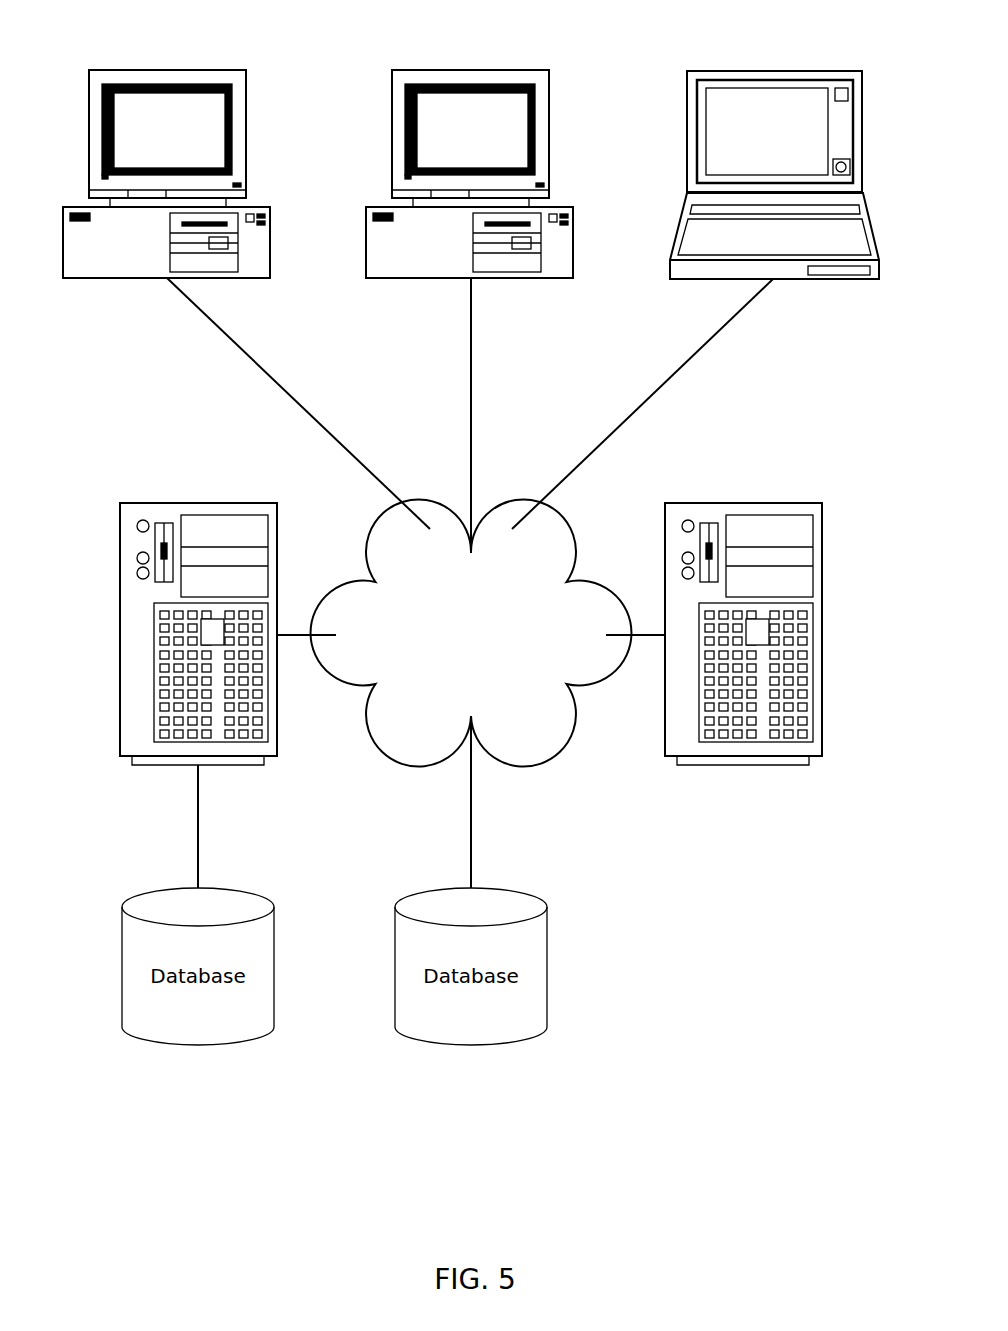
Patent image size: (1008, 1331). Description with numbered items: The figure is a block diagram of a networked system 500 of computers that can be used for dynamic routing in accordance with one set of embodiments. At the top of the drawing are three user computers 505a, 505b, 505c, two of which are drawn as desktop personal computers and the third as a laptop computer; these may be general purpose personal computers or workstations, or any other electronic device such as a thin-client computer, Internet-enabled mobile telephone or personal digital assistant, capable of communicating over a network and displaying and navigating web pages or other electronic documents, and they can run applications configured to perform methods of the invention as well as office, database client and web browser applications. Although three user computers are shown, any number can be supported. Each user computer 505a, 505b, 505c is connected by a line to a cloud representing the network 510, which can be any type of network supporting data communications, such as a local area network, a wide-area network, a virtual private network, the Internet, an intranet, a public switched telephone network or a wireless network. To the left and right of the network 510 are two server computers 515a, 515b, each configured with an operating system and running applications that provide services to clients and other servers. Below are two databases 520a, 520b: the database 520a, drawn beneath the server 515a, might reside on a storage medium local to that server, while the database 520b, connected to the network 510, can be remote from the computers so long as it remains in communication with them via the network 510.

The system 500 is at (470, 581).
The user computer 505a is at (271, 225).
The user computer 505b is at (365, 228).
The user computer 505c is at (686, 175).
The network 510 is at (508, 738).
The server computer 515a is at (120, 635).
The server computer 515b is at (822, 634).
The database 520a is at (198, 1045).
The database 520b is at (471, 1045).